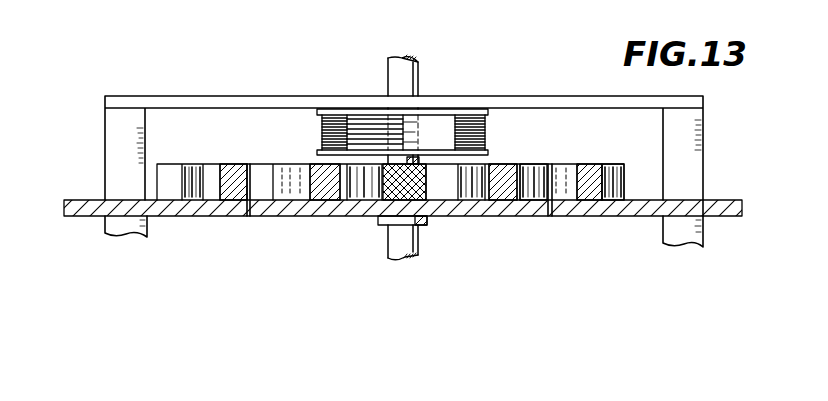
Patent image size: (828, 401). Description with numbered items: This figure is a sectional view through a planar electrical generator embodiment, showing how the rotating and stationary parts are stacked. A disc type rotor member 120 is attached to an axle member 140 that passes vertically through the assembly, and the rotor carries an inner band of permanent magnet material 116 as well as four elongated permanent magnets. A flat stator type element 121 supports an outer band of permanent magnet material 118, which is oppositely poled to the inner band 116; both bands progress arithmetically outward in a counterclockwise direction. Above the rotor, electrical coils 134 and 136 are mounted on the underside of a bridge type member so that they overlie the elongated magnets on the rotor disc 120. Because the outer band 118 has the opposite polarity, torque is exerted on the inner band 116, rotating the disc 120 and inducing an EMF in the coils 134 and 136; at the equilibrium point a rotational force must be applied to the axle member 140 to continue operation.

The inner band of permanent magnet material 116 is at (521, 175).
The outer band of permanent magnet material 118 is at (588, 165).
The disc type rotor member 120 is at (535, 215).
The flat stator type element 121 is at (580, 216).
The electrical coil 134 is at (389, 132).
The electrical coil 136 is at (321, 136).
The axle member 140 is at (418, 70).